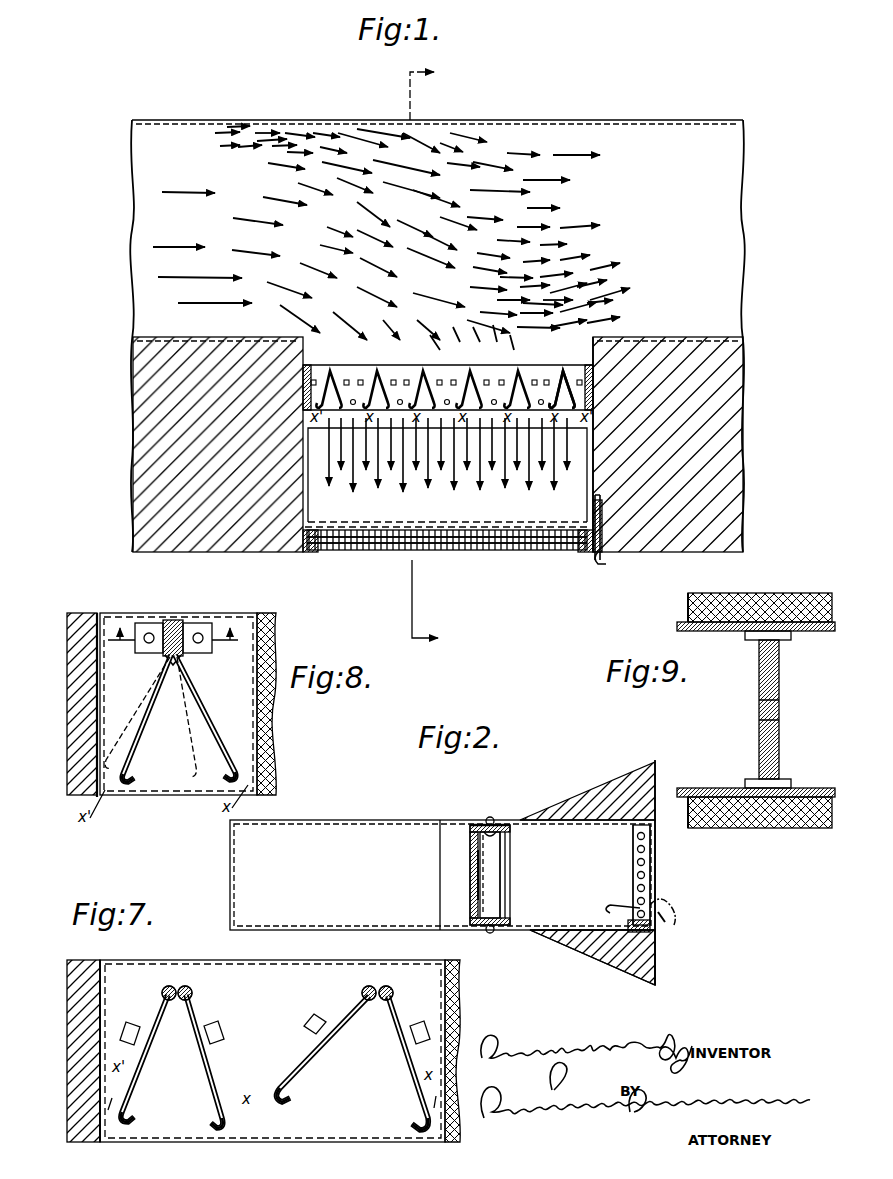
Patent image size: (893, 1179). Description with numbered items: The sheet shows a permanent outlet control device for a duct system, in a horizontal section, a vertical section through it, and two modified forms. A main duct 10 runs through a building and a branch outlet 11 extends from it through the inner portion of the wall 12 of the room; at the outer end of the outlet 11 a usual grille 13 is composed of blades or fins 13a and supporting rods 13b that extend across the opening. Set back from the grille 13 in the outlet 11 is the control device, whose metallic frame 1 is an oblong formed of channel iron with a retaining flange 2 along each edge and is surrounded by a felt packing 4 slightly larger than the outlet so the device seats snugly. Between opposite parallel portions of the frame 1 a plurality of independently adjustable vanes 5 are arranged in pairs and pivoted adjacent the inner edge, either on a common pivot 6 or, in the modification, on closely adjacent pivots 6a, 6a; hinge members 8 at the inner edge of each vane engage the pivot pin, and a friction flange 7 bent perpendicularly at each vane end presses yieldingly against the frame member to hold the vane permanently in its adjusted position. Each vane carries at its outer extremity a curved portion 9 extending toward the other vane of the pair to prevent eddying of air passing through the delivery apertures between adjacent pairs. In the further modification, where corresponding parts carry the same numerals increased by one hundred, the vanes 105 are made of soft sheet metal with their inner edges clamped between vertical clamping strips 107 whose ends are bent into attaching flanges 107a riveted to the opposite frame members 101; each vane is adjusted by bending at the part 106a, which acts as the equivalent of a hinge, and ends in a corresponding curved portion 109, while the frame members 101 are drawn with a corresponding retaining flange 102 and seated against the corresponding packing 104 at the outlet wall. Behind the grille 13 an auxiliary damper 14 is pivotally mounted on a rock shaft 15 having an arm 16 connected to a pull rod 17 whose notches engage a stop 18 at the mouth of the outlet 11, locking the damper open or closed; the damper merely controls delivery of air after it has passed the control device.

In FIG. 1, the metallic frame 1 is at (596, 366).
In FIG. 2, the metallic frame 1 is at (507, 858).
In FIG. 7, the metallic frame 1 is at (262, 985).
In FIG. 1, the retaining flange 2 is at (435, 359).
In FIG. 2, the retaining flange 2 is at (470, 923).
In FIG. 7, the retaining flange 2 is at (101, 962).
In FIG. 1, the packing 4 is at (590, 384).
In FIG. 2, the packing 4 is at (488, 824).
In FIG. 7, the packing 4 is at (78, 962).
In FIG. 1, the vanes 5 is at (561, 389).
In FIG. 2, the vanes 5 is at (492, 870).
In FIG. 7, the vanes 5 is at (138, 1070).
In FIG. 1, the common pivot 6 is at (423, 369).
In FIG. 2, the common pivot 6 is at (476, 838).
In FIG. 7, the closely adjacent pivots 6a is at (168, 986).
In FIG. 2, the friction flange 7 is at (497, 838).
In FIG. 7, the friction flange 7 is at (132, 1024).
In FIG. 2, the hinge members 8 is at (476, 875).
In FIG. 7, the hinge members 8 is at (162, 988).
In FIG. 8, the curved portion 9 is at (172, 638).
In FIG. 2, the curved portion 9 is at (505, 893).
In FIG. 7, the curved portion 9 is at (132, 1118).
In FIG. 1, the main duct 10 is at (664, 232).
In FIG. 2, the main duct 10 is at (325, 825).
In FIG. 1, the outlet 11 is at (597, 424).
In FIG. 2, the outlet 11 is at (548, 815).
In FIG. 1, the wall 12 is at (720, 488).
In FIG. 1, the grille 13 is at (345, 550).
In FIG. 2, the grille 13 is at (652, 860).
In FIG. 1, the blades or fins 13a is at (500, 550).
In FIG. 2, the blades or fins 13a is at (636, 842).
In FIG. 1, the supporting rods 13b is at (552, 550).
In FIG. 2, the supporting rods 13b is at (636, 876).
In FIG. 1, the damper 14 is at (600, 478).
In FIG. 2, the damper 14 is at (572, 942).
In FIG. 1, the rock shaft 15 is at (305, 552).
In FIG. 2, the rock shaft 15 is at (636, 934).
In FIG. 1, the arm 16 is at (602, 500).
In FIG. 2, the arm 16 is at (632, 928).
In FIG. 1, the pull rod 17 is at (607, 562).
In FIG. 2, the pull rod 17 is at (670, 905).
In FIG. 1, the stop 18 is at (597, 560).
In FIG. 8, the frame members 101 is at (255, 650).
In FIG. 9, the frame members 101 is at (677, 626).
In FIG. 8, the wall face 102 is at (99, 613).
In FIG. 9, the wall face 102 is at (688, 600).
In FIG. 8, the masonry wall 104 is at (74, 613).
In FIG. 9, the masonry wall 104 is at (688, 612).
In FIG. 8, the vanes 105 is at (150, 703).
In FIG. 9, the vanes 105 is at (759, 690).
In FIG. 8, the bending part 106a is at (190, 668).
In FIG. 8, the vertical clamping strip 107 is at (144, 623).
In FIG. 9, the vertical clamping strip 107 is at (732, 716).
In FIG. 8, the attaching flanges 107a is at (176, 620).
In FIG. 9, the attaching flanges 107a is at (752, 640).
In FIG. 8, the hook end 109 is at (132, 782).